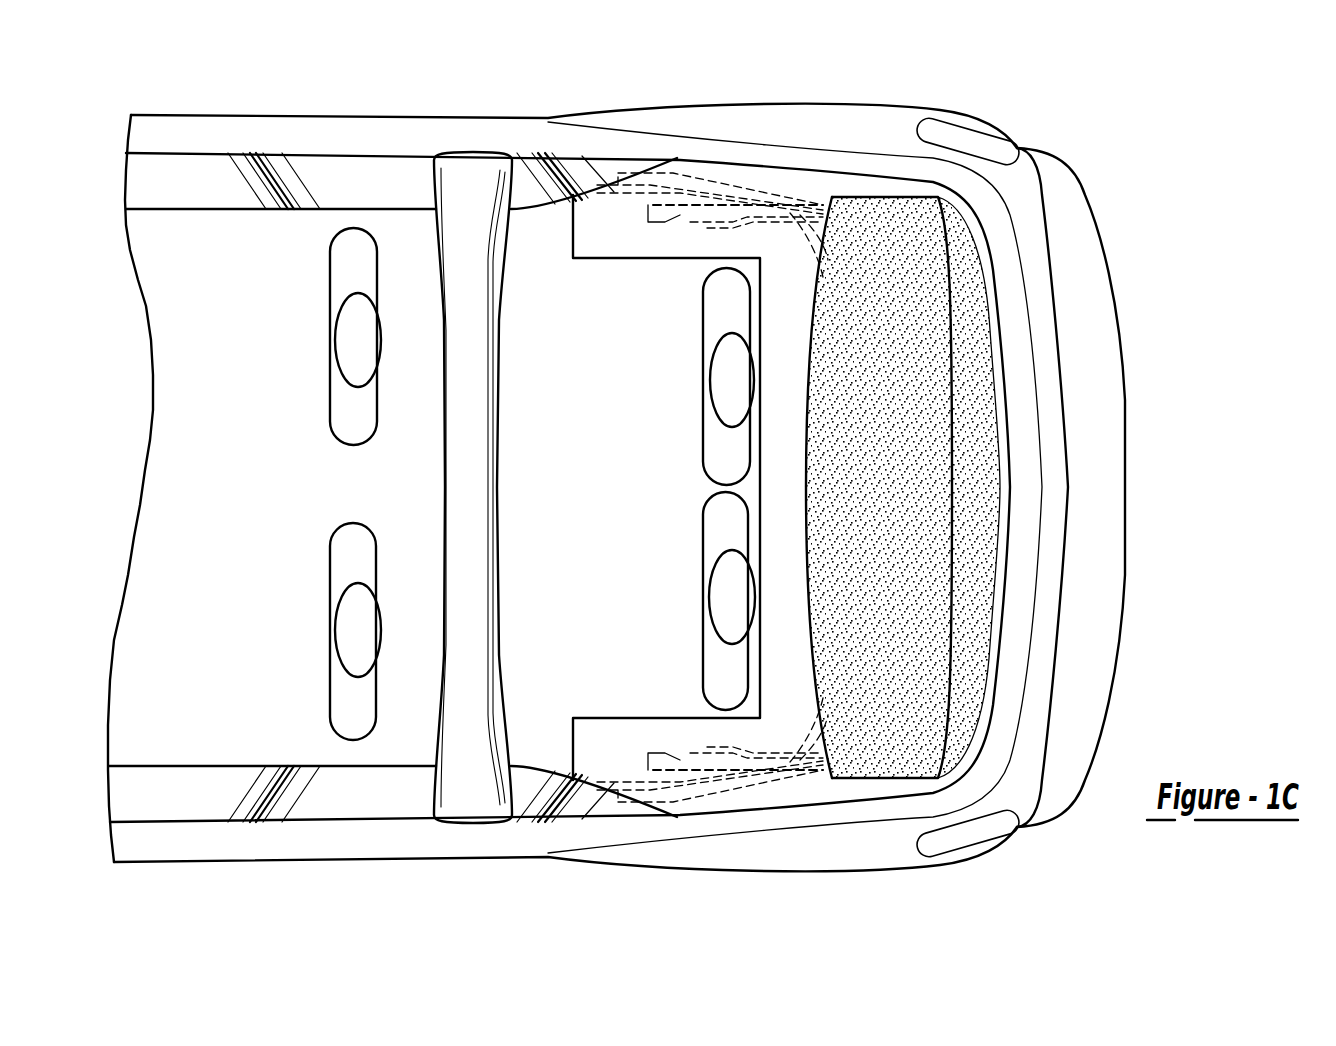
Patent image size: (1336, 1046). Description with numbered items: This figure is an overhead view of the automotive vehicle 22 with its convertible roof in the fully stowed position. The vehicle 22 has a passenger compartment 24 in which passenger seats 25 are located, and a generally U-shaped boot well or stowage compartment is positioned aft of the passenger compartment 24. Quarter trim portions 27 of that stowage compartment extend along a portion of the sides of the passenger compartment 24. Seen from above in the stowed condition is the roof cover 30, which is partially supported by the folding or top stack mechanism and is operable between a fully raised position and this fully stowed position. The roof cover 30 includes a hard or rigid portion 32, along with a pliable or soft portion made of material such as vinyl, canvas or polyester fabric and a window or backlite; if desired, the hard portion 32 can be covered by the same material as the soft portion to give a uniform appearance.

The automotive vehicle 22 is at (559, 101).
The quarter trim portions 27 is at (622, 228).
The passenger compartment 24 is at (599, 398).
The passenger seats 25 is at (348, 548).
The roof cover 30 is at (879, 483).
The hard portion 32 is at (889, 558).